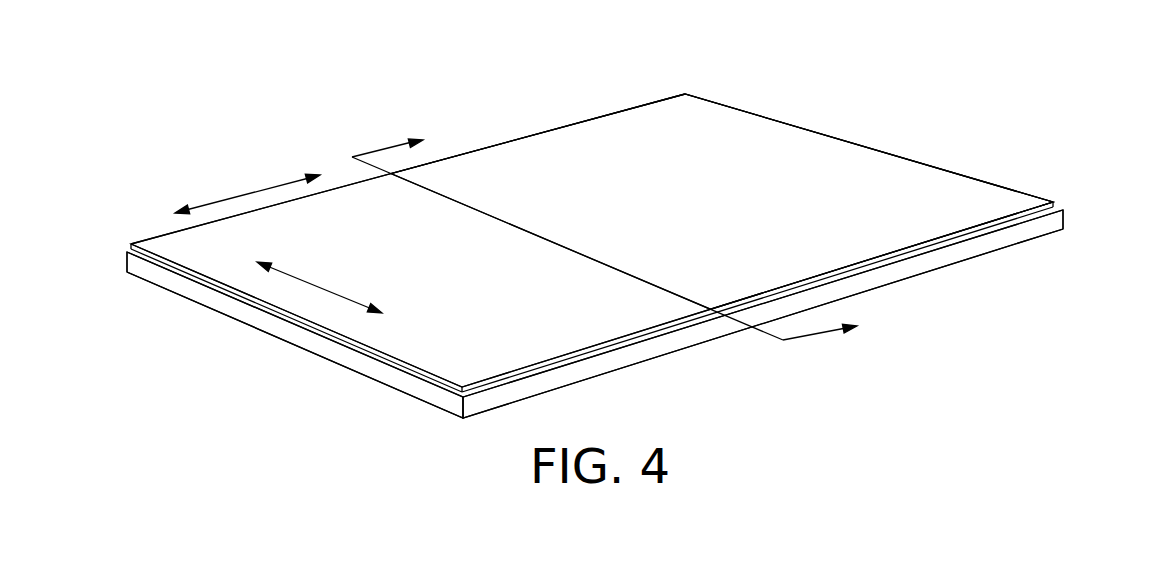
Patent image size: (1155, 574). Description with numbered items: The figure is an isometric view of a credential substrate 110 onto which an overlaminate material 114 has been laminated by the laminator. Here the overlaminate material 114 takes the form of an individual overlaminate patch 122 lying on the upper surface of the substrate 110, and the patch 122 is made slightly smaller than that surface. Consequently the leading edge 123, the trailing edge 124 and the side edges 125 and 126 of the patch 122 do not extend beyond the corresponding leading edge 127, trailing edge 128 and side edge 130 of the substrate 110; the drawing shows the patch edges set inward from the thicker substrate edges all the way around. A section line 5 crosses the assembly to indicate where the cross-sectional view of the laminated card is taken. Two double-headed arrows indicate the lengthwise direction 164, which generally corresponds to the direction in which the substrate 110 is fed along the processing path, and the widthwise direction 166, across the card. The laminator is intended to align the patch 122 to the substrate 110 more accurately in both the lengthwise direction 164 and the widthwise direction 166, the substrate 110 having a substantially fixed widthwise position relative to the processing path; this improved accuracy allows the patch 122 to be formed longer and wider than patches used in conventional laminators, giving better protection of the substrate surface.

The section line 5- 5 is at (602, 246).
The credential substrate 110 is at (1045, 227).
The overlaminate material 114 is at (827, 153).
The overlaminate patch 122 is at (937, 183).
The leading edge of patch 123 is at (213, 283).
The trailing edge of patch 124 is at (740, 112).
The side edge of patch 125 is at (602, 117).
The side edge of patch 126 is at (943, 238).
The leading edge of substrate 127 is at (283, 328).
The trailing edge of substrate 128 is at (1057, 208).
The side edge of substrate 130 is at (682, 340).
The lengthwise direction 164 is at (238, 197).
The widthwise direction 166 is at (318, 285).